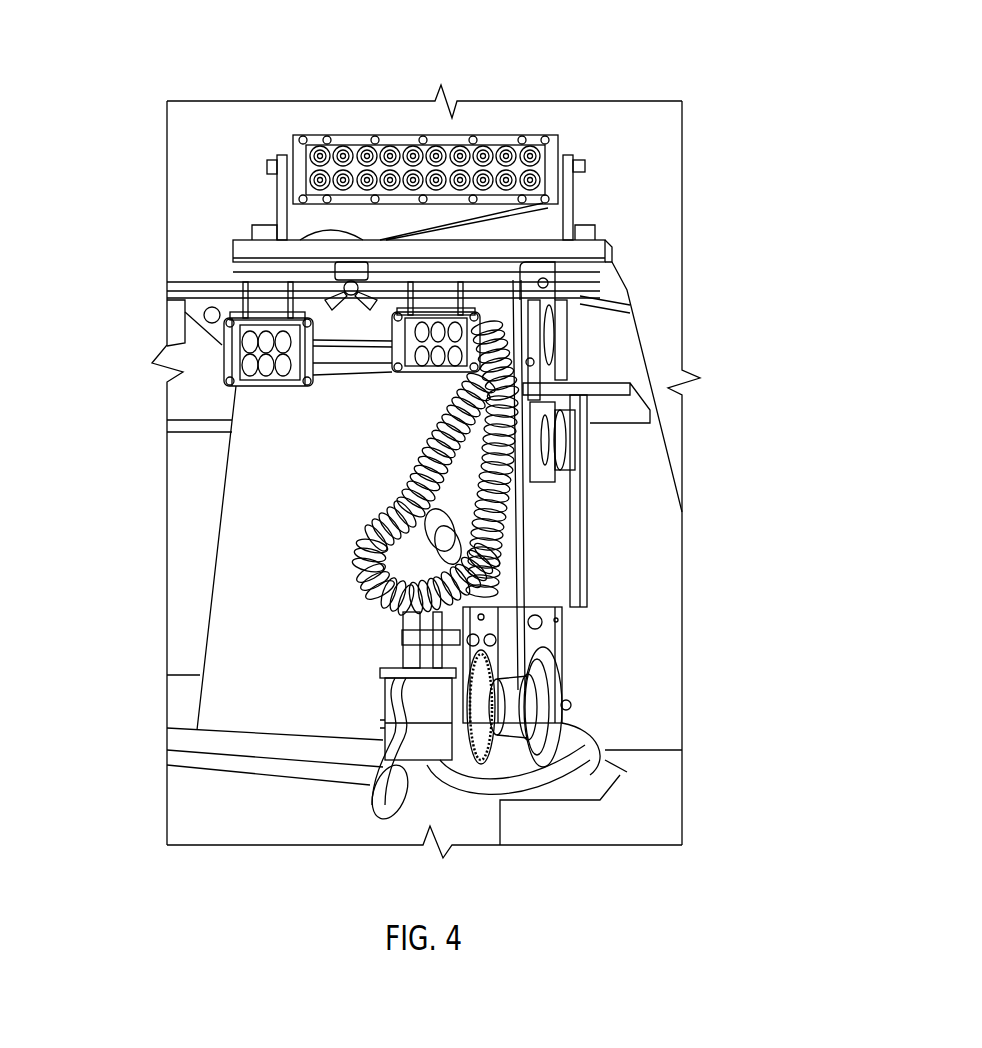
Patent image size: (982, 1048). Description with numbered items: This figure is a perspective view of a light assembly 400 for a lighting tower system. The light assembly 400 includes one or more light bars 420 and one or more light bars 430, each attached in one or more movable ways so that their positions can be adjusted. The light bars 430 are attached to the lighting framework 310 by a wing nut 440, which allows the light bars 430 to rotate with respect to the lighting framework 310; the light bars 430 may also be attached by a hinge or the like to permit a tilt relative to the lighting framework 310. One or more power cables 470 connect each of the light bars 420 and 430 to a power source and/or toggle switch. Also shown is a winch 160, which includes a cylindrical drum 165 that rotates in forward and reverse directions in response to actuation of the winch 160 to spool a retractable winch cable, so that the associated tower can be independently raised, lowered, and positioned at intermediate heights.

The light assembly 400 is at (770, 89).
The light bar 420 is at (490, 128).
The lighting framework 310 is at (613, 249).
The wing nut 440 is at (316, 302).
The light bar 430 is at (208, 358).
The power cable 470 is at (498, 477).
The cylindrical drum 165 is at (578, 678).
The winch 160 is at (454, 752).